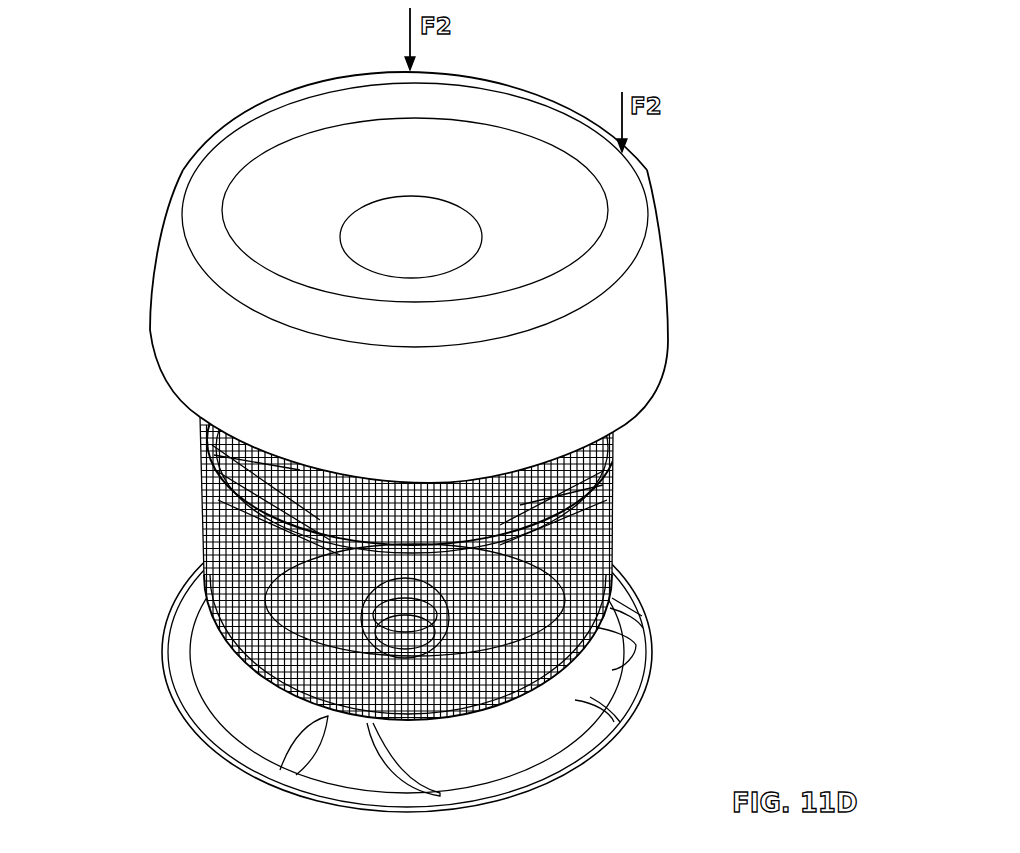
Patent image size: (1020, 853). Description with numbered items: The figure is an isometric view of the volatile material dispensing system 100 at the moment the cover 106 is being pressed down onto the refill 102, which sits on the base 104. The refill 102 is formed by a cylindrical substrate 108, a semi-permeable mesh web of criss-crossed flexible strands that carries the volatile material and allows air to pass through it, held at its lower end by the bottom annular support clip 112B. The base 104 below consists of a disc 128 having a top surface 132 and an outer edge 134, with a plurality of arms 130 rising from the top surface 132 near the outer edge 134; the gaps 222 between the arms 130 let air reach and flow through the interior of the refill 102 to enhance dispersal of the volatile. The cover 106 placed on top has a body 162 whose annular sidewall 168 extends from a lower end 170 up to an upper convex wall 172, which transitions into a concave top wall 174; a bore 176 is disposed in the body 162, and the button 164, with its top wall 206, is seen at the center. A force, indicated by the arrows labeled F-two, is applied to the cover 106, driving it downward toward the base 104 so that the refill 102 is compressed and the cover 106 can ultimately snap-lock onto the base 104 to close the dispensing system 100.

The volatile material dispensing system 100 is at (394, 434).
The volatile material dispensing refill 102 is at (424, 585).
The base 104 is at (435, 663).
The cover 106 is at (413, 258).
The substrate 108 is at (205, 488).
The bottom annular support clip 112B is at (593, 643).
The disc 128 is at (265, 738).
The arms 130 is at (325, 762).
The top surface 132 is at (190, 628).
The outer edge 134 is at (606, 728).
The body 162 is at (647, 283).
The button 164 is at (400, 227).
The annular sidewall 168 is at (627, 350).
The lower end 170 is at (647, 403).
The upper convex wall 172 is at (605, 188).
The concave top wall 174 is at (490, 141).
The bore 176 is at (333, 244).
The top wall 206 is at (430, 220).
The gaps 222 is at (520, 714).